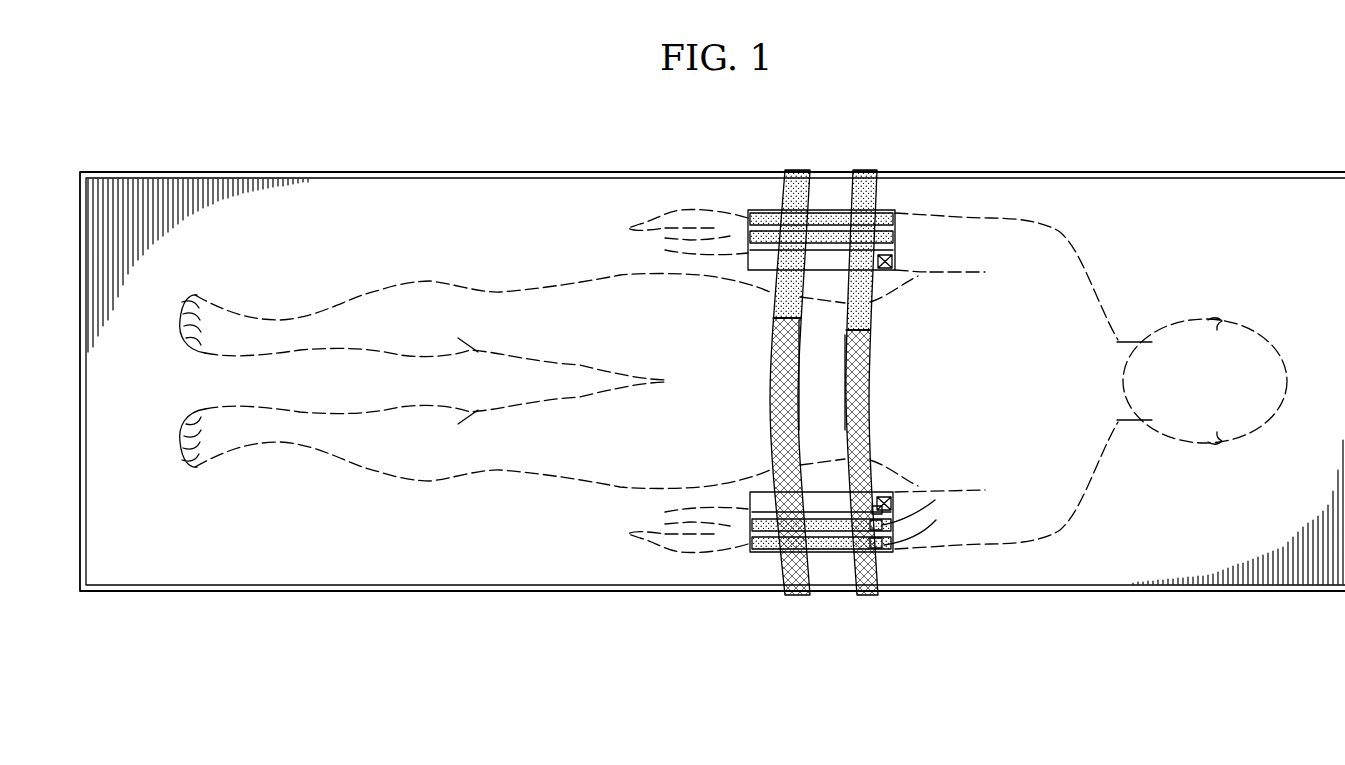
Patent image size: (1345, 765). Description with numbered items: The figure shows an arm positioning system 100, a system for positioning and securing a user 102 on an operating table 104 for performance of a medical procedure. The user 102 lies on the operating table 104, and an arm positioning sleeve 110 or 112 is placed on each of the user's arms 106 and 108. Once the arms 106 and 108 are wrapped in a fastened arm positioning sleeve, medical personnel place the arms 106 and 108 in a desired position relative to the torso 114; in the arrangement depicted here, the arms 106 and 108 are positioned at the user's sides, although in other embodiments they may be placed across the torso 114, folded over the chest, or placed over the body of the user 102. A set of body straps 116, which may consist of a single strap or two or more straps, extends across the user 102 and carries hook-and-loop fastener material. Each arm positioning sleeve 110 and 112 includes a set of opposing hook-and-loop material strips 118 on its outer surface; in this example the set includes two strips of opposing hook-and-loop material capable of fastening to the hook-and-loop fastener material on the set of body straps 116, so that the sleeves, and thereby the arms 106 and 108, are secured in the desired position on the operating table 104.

The arm positioning system 100 is at (1072, 645).
The user 102 is at (1094, 293).
The operating table 104 is at (405, 172).
The arm 106 is at (930, 226).
The arm 108 is at (930, 553).
The arm positioning sleeve 110 is at (748, 230).
The arm positioning sleeve 112 is at (733, 553).
The torso 114 is at (1043, 389).
The set of body straps 116 is at (872, 378).
The set of opposing hook-and-loop material strips 118 is at (930, 540).